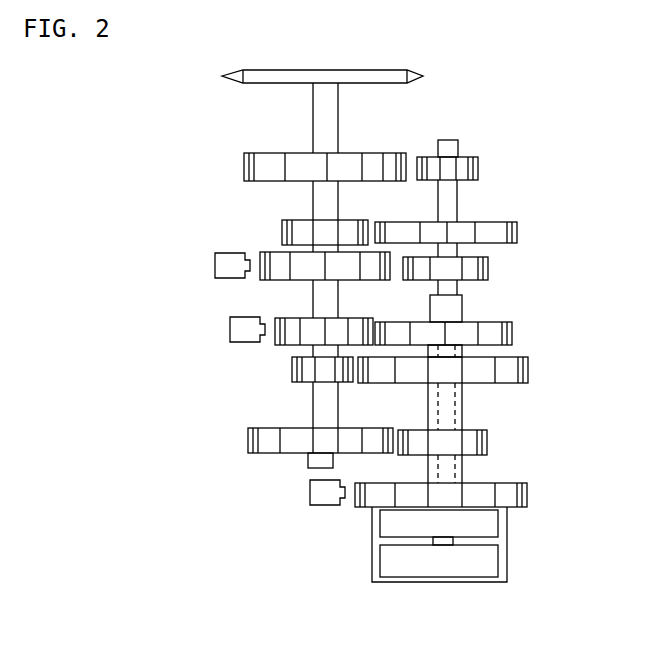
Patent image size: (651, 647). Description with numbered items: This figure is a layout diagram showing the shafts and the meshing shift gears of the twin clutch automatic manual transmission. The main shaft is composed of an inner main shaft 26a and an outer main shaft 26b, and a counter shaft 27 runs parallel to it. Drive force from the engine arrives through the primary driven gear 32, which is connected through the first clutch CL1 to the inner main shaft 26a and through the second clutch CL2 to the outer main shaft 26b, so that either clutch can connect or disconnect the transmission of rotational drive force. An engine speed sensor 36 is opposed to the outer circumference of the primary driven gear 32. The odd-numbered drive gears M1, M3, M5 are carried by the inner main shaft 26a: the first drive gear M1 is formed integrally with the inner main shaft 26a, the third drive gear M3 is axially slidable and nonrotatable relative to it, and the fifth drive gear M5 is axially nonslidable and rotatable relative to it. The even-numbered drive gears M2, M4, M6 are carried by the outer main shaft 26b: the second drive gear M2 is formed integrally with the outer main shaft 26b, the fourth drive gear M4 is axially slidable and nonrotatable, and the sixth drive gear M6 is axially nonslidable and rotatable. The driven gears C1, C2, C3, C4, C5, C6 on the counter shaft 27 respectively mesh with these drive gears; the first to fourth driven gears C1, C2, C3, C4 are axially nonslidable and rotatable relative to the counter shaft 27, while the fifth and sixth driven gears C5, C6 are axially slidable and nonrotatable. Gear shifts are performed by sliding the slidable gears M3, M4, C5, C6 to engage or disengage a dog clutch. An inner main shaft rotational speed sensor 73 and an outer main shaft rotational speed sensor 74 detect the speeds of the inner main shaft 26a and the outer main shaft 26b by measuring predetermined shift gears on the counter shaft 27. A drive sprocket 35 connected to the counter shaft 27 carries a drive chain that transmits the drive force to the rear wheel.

The drive sprocket 35 is at (283, 76).
The inner main shaft 26a is at (450, 140).
The outer main shaft 26b is at (462, 306).
The counter shaft 27 is at (320, 409).
The first drive gear M1 is at (478, 168).
The second drive gear M2 is at (488, 443).
The third drive gear M3 is at (488, 270).
The fourth drive gear M4 is at (512, 335).
The fifth drive gear M5 is at (517, 232).
The sixth drive gear M6 is at (530, 368).
The first driven gear C1 is at (246, 172).
The second driven gear C2 is at (250, 444).
The third driven gear C3 is at (277, 280).
The fourth driven gear C4 is at (295, 330).
The fifth driven gear C5 is at (283, 232).
The sixth driven gear C6 is at (292, 372).
The inner main shaft rotational speed sensor 73 is at (215, 273).
The outer main shaft rotational speed sensor 74 is at (232, 337).
The engine speed sensor 36 is at (310, 498).
The primary driven gear 32 is at (360, 507).
The first clutch CL1 is at (483, 565).
The second clutch CL2 is at (483, 528).